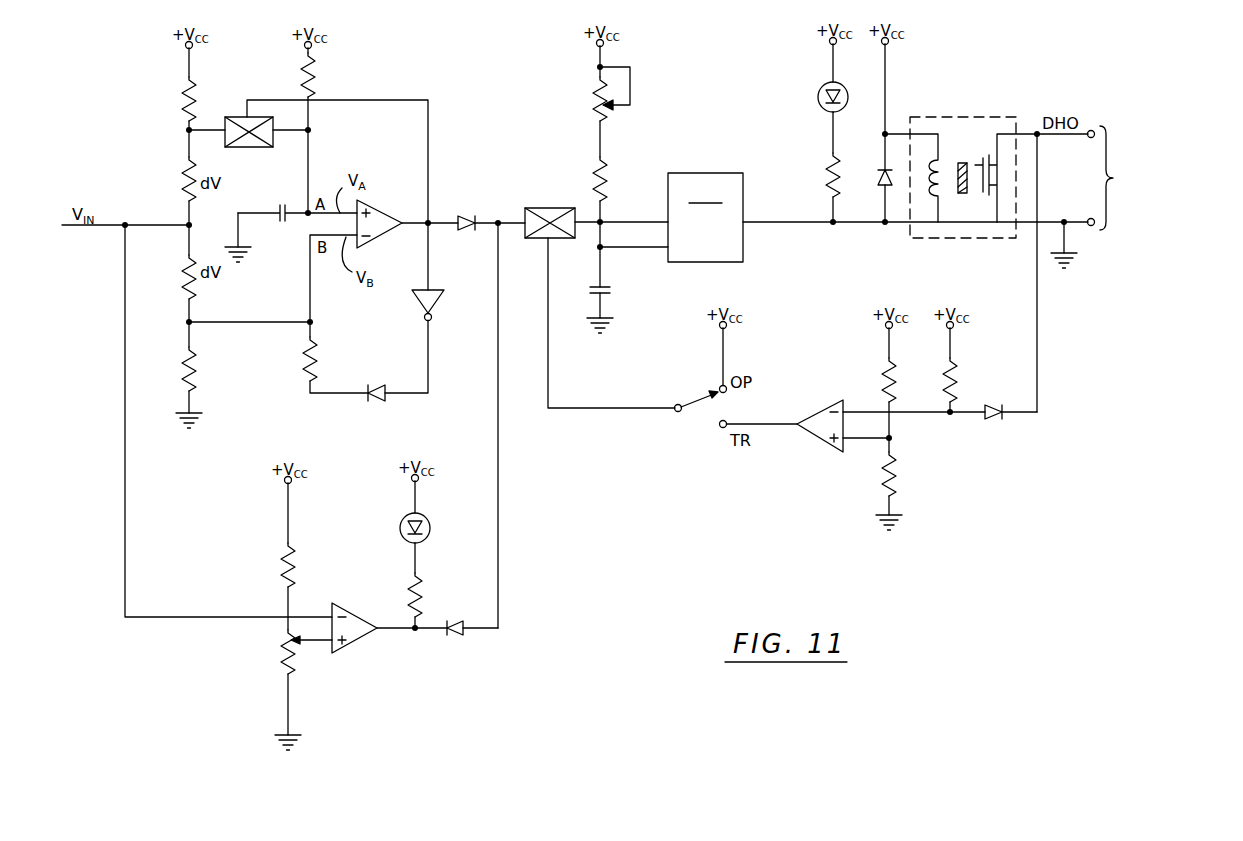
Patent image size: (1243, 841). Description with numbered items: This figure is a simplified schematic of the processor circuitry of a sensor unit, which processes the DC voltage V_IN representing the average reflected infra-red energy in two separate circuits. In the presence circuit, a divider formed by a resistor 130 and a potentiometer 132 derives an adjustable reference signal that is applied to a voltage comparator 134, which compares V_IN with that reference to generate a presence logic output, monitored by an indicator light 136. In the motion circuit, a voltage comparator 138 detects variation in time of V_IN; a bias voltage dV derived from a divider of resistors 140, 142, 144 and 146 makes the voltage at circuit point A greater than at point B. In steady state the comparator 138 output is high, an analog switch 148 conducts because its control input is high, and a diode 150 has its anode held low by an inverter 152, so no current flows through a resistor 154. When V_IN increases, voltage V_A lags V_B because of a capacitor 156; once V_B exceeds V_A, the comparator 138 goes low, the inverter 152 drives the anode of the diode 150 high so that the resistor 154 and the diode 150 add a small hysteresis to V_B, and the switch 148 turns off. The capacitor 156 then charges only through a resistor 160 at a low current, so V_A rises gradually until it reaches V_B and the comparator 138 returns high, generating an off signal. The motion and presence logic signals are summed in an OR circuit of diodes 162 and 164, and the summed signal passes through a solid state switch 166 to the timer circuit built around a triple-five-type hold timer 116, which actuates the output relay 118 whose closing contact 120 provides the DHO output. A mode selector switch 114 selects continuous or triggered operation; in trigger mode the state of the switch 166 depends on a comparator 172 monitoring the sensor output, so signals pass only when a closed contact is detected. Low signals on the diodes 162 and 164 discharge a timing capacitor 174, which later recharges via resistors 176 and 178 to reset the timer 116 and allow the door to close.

The mode selector switch 114 is at (690, 400).
The hold timer 116 is at (700, 173).
The output relay 118 is at (953, 238).
The closing contact 120 is at (1114, 153).
The resistor 130 is at (280, 553).
The potentiometer 132 is at (281, 650).
The voltage comparator 134 is at (346, 644).
The indicator light 136 is at (428, 539).
The voltage comparator 138 is at (378, 203).
The resistor 140 is at (182, 101).
The resistor 142 is at (182, 165).
The resistor 144 is at (182, 261).
The resistor 146 is at (182, 359).
The analog switch 148 is at (245, 147).
The diode 150 is at (378, 402).
The inverter 152 is at (436, 302).
The resistor 154 is at (318, 351).
The capacitor 156 is at (272, 228).
The resistor 160 is at (316, 74).
The diode 162 is at (470, 214).
The diode 164 is at (458, 639).
The solid state switch 166 is at (556, 208).
The comparator 172 is at (820, 446).
The timing capacitor 174 is at (610, 291).
The resistor 176 is at (607, 173).
The resistor 178 is at (593, 85).